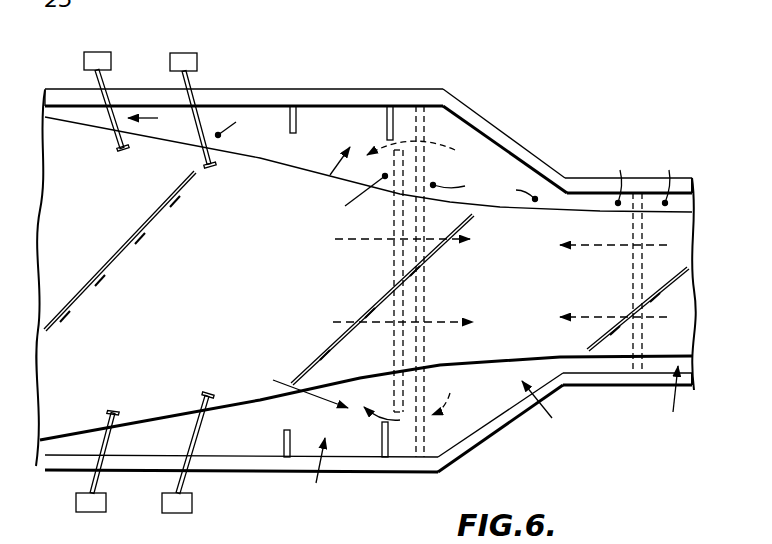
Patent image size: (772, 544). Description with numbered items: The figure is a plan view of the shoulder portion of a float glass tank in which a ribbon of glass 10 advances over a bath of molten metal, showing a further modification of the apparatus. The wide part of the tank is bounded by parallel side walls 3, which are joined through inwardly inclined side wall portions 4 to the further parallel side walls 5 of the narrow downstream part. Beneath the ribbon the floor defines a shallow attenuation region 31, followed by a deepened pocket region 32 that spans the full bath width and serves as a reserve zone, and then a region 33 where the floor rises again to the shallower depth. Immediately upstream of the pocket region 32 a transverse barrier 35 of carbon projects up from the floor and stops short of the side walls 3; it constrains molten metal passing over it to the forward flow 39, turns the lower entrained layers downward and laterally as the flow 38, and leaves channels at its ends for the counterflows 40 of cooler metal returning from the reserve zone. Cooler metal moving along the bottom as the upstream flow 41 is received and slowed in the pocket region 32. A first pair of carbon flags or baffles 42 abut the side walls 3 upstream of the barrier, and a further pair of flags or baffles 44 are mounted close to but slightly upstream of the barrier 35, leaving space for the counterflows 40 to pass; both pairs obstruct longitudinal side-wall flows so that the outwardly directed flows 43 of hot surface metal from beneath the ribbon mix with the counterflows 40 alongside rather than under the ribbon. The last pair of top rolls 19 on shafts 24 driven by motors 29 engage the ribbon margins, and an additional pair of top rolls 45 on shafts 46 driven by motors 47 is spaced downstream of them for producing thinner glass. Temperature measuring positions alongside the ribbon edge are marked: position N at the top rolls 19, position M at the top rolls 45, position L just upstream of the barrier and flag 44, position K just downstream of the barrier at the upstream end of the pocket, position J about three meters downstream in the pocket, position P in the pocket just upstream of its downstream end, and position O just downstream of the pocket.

The parallel side wall 3 is at (329, 100).
The inwardly inclined side wall portion 4 is at (502, 126).
The further parallel side wall 5 is at (584, 178).
The ultimate ribbon of glass 10 is at (676, 233).
The top roll 19 is at (123, 153).
The shaft 24 is at (108, 83).
The motor 29 is at (100, 58).
The region of the bath 31 is at (313, 475).
The pocket region 32 is at (552, 412).
The region adjacent the reserve zone 33 is at (670, 403).
The transverse barrier 35 is at (393, 274).
The downward and upstream flow 38 is at (388, 208).
The forward flow 39 is at (358, 240).
The counterflow 40 is at (426, 280).
The upstream flow 41 is at (627, 249).
The flag or baffle 42 is at (292, 106).
The outwardly directed flow 43 is at (316, 184).
The further flag or baffle 44 is at (389, 106).
The additional top roll 45 is at (213, 167).
The shaft 46 is at (196, 86).
The motor 47 is at (190, 58).
The position N is at (153, 120).
The position M is at (234, 124).
The position K is at (457, 185).
The position J is at (519, 187).
The position L is at (358, 197).
The position P is at (616, 177).
The position O is at (666, 177).